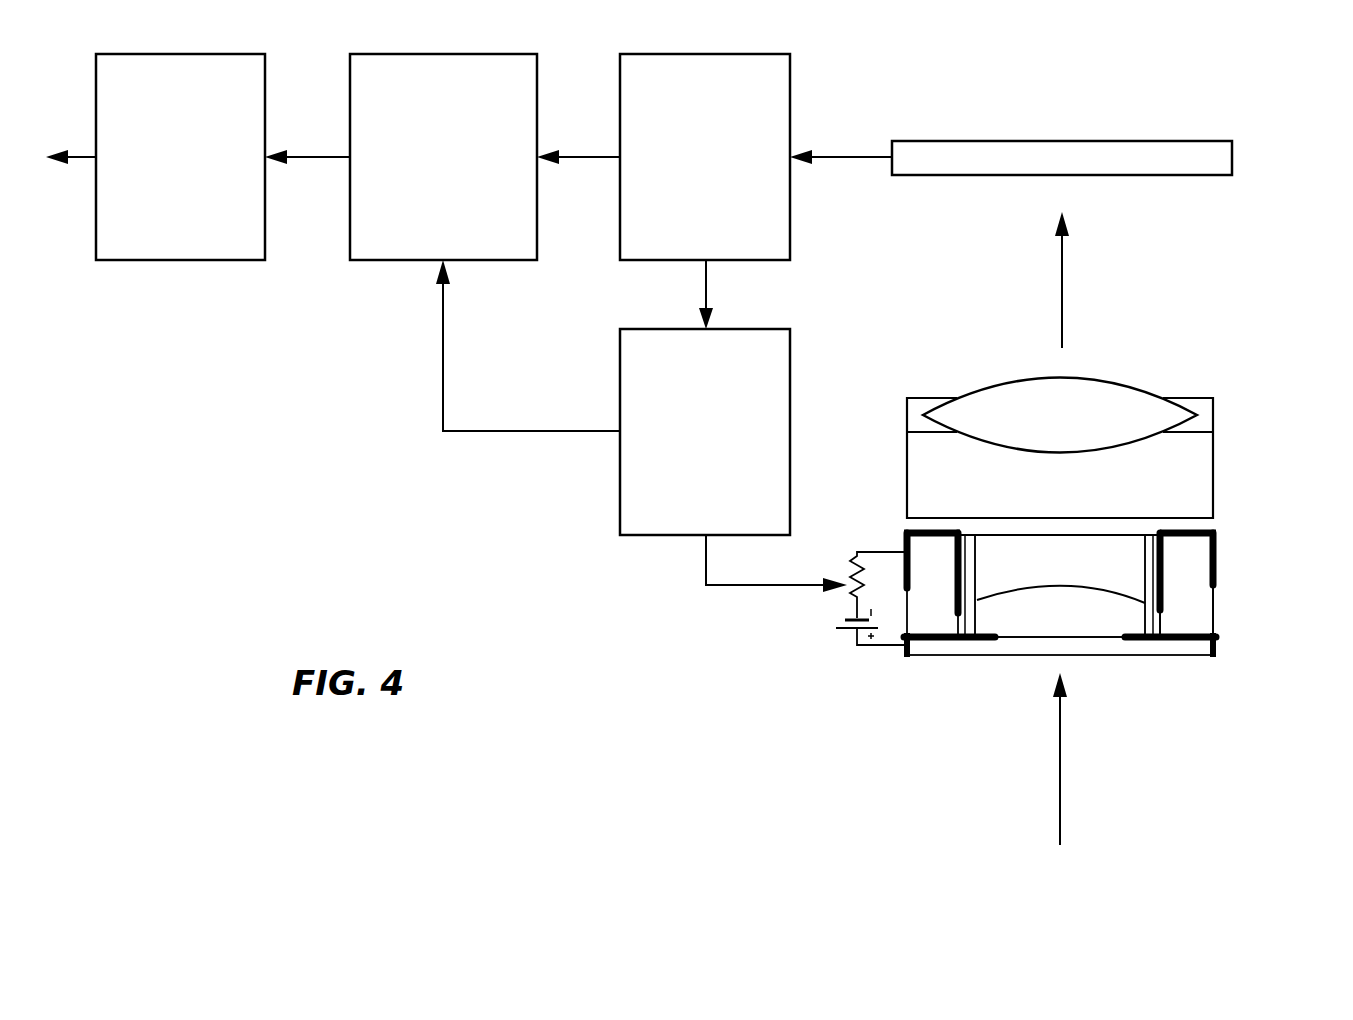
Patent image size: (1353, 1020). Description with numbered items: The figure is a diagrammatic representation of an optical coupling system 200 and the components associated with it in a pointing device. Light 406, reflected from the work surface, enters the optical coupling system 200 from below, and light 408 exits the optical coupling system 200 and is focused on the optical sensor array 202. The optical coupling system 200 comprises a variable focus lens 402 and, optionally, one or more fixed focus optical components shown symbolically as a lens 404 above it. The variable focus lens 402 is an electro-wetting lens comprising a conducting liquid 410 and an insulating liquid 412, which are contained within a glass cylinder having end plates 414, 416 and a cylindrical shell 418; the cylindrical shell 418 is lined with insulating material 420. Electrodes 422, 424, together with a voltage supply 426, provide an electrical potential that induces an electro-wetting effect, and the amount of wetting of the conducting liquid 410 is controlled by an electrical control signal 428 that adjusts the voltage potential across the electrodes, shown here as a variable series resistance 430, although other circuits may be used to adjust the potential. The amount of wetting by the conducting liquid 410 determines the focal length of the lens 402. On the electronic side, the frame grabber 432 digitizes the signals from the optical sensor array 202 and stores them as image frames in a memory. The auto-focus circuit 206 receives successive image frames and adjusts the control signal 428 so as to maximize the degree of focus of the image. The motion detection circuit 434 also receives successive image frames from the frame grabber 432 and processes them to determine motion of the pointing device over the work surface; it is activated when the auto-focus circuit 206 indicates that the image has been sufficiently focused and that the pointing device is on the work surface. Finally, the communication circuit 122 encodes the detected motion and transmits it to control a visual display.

The communication circuit 122 is at (265, 60).
The motion detection circuit 434 is at (537, 60).
The frame grabber 432 is at (790, 78).
The optical sensor array 202 is at (1073, 141).
The light 408 is at (1062, 280).
The auto-focus circuit 206 is at (790, 378).
The electrical control signal 428 is at (706, 570).
The variable series resistance 430 is at (857, 600).
The voltage supply 426 is at (850, 632).
The variable focus lens 402 is at (1262, 650).
The optical coupling system 200 is at (1213, 458).
The fixed focus optical component 404 is at (1110, 378).
The end plate 416 is at (1110, 517).
The insulating material 420 is at (982, 540).
The electrode 424 is at (907, 530).
The cylindrical shell 418 is at (1195, 620).
The electrode 422 is at (907, 655).
The end plate 414 is at (1162, 655).
The insulating liquid 412 is at (1110, 620).
The conducting liquid 410 is at (1027, 567).
The light 406 is at (1060, 790).